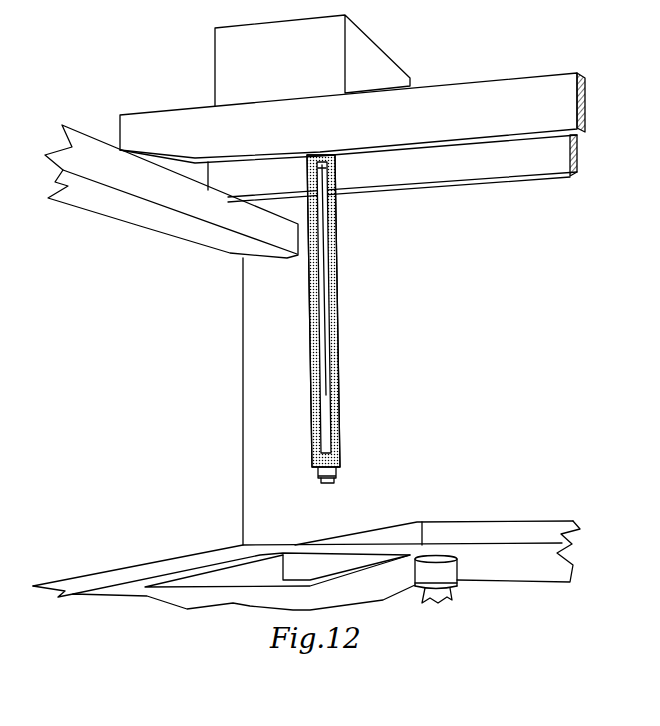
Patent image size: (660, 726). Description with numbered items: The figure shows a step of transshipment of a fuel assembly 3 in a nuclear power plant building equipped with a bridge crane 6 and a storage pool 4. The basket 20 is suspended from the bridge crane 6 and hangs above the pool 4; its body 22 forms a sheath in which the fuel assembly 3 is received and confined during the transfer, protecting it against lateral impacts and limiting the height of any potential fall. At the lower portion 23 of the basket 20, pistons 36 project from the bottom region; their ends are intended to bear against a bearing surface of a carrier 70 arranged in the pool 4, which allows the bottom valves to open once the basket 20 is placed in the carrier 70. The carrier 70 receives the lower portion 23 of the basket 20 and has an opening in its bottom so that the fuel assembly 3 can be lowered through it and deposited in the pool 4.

The bridge crane 6 is at (399, 48).
The basket 20 is at (326, 323).
The body 22 is at (338, 218).
The fuel assembly 3 is at (328, 366).
The pistons 36 is at (338, 475).
The lower portion 23 is at (318, 476).
The storage pool 4 is at (325, 543).
The carrier 70 is at (434, 570).